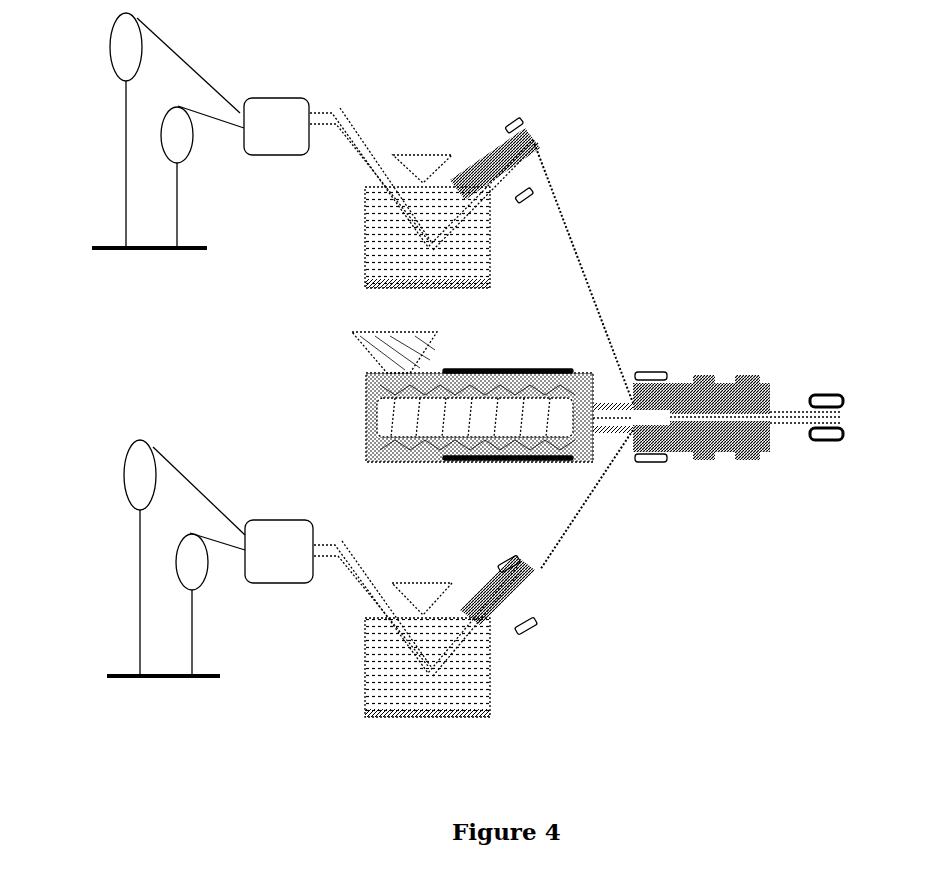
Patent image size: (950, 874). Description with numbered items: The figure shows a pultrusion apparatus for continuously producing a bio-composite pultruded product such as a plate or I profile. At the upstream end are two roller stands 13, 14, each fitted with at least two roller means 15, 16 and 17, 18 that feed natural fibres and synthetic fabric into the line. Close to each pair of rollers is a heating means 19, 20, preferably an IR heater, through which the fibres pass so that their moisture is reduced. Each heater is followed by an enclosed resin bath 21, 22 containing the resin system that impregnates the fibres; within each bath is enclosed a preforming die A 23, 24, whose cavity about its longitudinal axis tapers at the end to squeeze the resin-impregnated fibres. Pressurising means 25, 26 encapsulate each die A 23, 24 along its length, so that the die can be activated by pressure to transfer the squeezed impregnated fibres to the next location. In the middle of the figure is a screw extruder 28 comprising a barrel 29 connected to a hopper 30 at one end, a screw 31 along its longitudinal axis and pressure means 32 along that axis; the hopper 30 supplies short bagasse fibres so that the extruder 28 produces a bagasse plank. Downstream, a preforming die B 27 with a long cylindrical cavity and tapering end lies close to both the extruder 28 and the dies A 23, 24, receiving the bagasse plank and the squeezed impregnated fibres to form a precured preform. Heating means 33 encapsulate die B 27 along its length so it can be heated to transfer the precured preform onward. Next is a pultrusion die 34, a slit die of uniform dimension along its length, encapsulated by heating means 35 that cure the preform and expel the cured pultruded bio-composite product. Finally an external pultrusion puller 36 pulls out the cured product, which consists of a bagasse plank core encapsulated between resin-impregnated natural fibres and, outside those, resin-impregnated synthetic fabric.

The roller stand 13 is at (155, 251).
The roller stand 14 is at (170, 680).
The roller means 15 is at (110, 50).
The roller means 16 is at (192, 148).
The roller means 17 is at (123, 470).
The roller means 18 is at (205, 578).
The heating means 19 is at (223, 86).
The heating means 20 is at (233, 515).
The enclosed resin bath 21 is at (365, 240).
The enclosed resin bath 22 is at (365, 673).
The preforming die A 23 is at (500, 150).
The preforming die A 24 is at (517, 640).
The pressurising means 25 is at (535, 190).
The pressurising means 26 is at (525, 565).
The preforming die B 27 is at (645, 463).
The screw extruder 28 is at (366, 397).
The barrel 29 is at (413, 453).
The hopper 30 is at (430, 345).
The screw 31 is at (517, 390).
The pressure means 32 is at (493, 465).
The heating means 33 is at (648, 372).
The pultrusion die 34 is at (730, 417).
The heating means 35 is at (750, 375).
The external pultrusion puller 36 is at (838, 395).